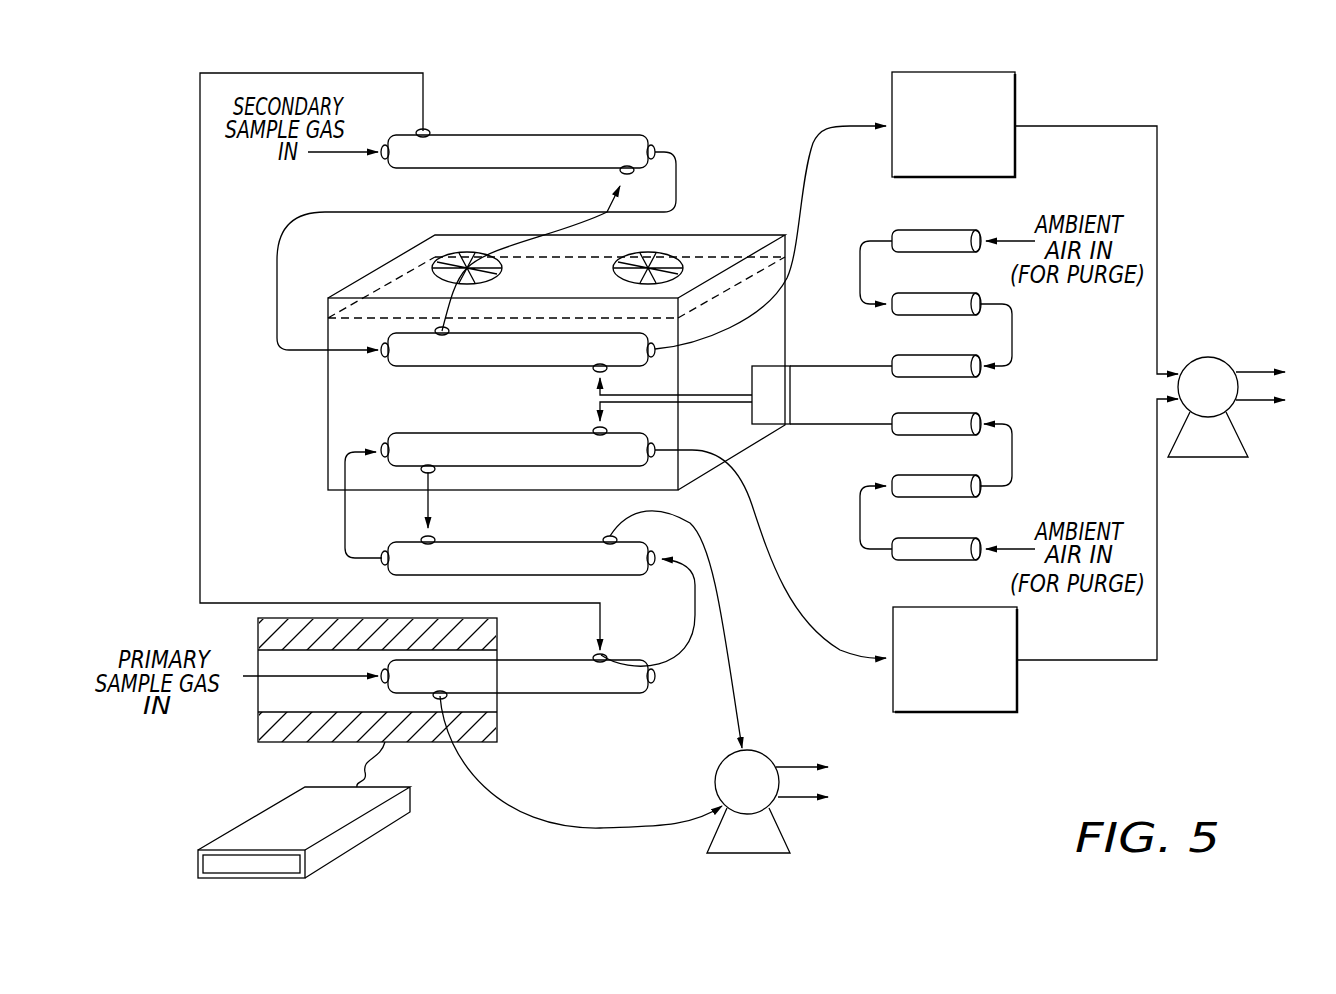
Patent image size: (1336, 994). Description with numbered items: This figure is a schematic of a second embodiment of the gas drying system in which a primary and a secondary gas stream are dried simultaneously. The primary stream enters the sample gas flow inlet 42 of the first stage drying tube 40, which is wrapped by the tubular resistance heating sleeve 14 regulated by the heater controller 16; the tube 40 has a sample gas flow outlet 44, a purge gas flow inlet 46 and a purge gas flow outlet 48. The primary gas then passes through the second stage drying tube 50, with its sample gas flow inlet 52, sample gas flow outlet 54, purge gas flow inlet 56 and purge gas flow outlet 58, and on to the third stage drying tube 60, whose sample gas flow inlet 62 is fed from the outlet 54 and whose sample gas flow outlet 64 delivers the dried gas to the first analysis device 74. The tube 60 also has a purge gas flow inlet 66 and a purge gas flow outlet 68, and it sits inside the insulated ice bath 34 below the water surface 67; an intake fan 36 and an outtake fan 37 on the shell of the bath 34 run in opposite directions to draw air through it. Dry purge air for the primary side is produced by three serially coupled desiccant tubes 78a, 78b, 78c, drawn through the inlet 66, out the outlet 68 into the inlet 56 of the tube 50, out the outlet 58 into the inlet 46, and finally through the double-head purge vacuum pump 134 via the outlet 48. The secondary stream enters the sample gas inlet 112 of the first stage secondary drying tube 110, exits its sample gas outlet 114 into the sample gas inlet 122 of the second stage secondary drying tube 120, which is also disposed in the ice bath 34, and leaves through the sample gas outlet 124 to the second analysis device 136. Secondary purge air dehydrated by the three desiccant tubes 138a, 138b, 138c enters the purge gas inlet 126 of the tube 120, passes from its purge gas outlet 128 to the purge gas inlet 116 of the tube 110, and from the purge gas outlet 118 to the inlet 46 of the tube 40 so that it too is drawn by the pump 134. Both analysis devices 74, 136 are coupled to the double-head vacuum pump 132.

The heating sleeve 14 is at (282, 742).
The heater controller 16 is at (355, 850).
The ice bath 34 is at (327, 412).
The intake fan 36 is at (678, 253).
The outtake fan 37 is at (450, 250).
The first stage drying tube 40 is at (538, 660).
The sample gas flow inlet 42 is at (380, 668).
The sample gas flow outlet 44 is at (656, 685).
The purge gas flow inlet 46 is at (606, 652).
The purge gas flow outlet 48 is at (445, 698).
The second stage drying tube 50 is at (523, 541).
The sample gas flow inlet 52 is at (660, 548).
The sample gas flow outlet 54 is at (381, 570).
The purge gas flow inlet 56 is at (426, 539).
The purge gas flow outlet 58 is at (600, 538).
The third stage drying tube 60 is at (470, 432).
The sample gas flow inlet 62 is at (384, 442).
The sample gas flow outlet 64 is at (656, 448).
The purge gas flow inlet 66 is at (597, 420).
The surface 67 is at (730, 253).
The purge gas flow outlet 68 is at (433, 470).
The analysis device 74 is at (892, 634).
The desiccant tube 78a is at (910, 537).
The desiccant tube 78b is at (910, 474).
The desiccant tube 78c is at (910, 412).
The first stage secondary drying tube 110 is at (650, 133).
The sample gas inlet 112 is at (380, 146).
The sample gas outlet 114 is at (657, 147).
The purge gas inlet 116 is at (620, 172).
The purge gas outlet 118 is at (428, 125).
The second stage secondary drying tube 120 is at (408, 333).
The sample gas inlet 122 is at (383, 342).
The sample gas outlet 124 is at (648, 340).
The purge gas inlet 126 is at (606, 370).
The purge gas outlet 128 is at (448, 329).
The double-head vacuum pump 132 is at (1228, 362).
The double-head purge vacuum pump 134 is at (765, 750).
The second analysis device 136 is at (953, 72).
The desiccant tube 138a is at (910, 228).
The desiccant tube 138b is at (910, 292).
The desiccant tube 138c is at (910, 354).